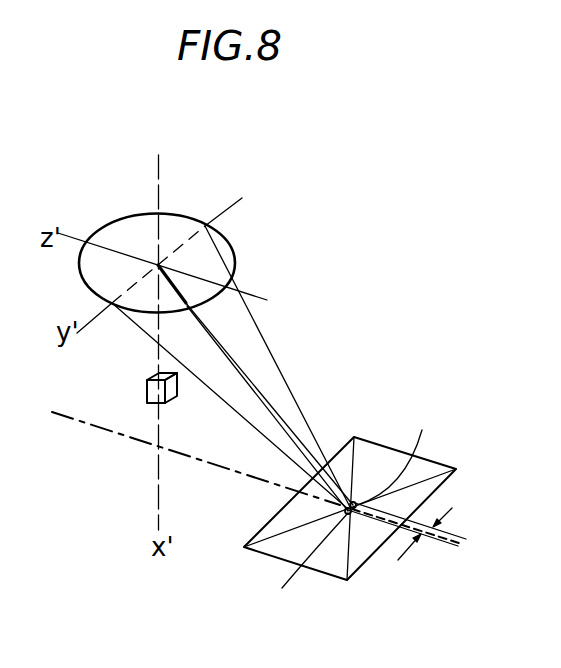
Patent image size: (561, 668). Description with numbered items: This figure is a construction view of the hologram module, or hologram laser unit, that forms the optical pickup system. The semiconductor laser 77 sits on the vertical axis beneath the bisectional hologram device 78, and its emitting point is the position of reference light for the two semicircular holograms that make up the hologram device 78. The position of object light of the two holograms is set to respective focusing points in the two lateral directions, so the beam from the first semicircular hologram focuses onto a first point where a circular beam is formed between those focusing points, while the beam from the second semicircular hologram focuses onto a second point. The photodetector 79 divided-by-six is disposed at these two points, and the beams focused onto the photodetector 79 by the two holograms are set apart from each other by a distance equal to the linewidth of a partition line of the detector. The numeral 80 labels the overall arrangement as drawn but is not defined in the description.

The semiconductor laser 77 is at (147, 392).
The bisectional hologram device 78 is at (178, 216).
The photodetector divided-by-six 79 is at (377, 443).
The optical system 80 is at (359, 274).